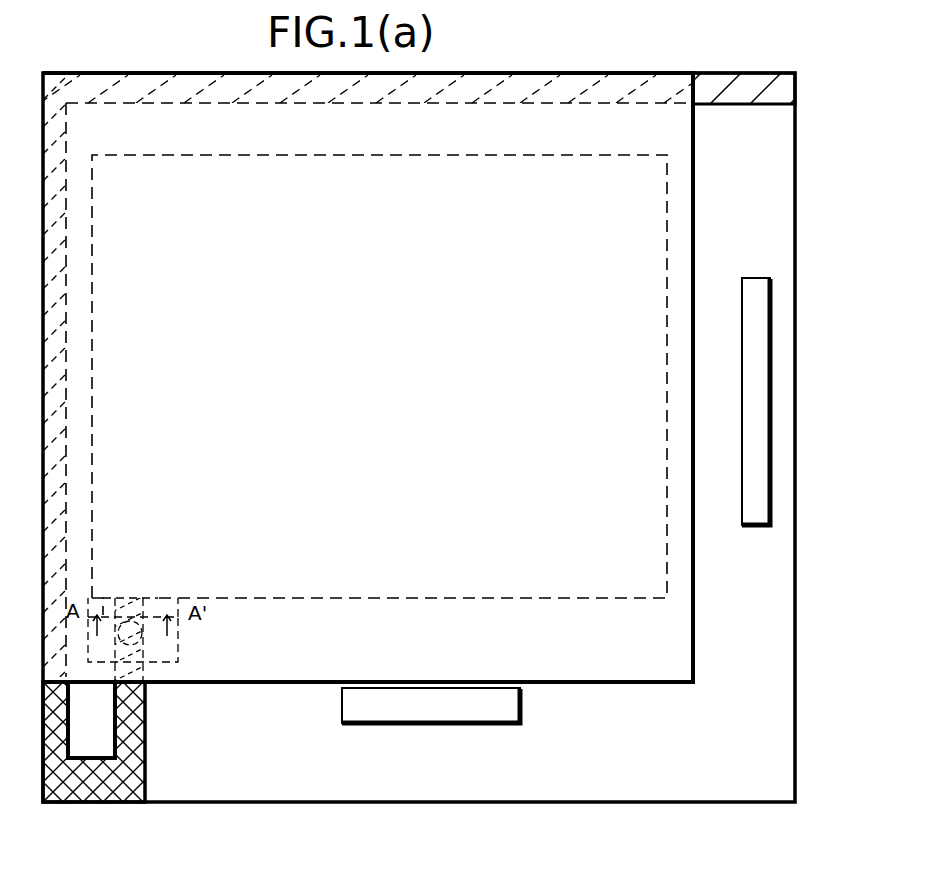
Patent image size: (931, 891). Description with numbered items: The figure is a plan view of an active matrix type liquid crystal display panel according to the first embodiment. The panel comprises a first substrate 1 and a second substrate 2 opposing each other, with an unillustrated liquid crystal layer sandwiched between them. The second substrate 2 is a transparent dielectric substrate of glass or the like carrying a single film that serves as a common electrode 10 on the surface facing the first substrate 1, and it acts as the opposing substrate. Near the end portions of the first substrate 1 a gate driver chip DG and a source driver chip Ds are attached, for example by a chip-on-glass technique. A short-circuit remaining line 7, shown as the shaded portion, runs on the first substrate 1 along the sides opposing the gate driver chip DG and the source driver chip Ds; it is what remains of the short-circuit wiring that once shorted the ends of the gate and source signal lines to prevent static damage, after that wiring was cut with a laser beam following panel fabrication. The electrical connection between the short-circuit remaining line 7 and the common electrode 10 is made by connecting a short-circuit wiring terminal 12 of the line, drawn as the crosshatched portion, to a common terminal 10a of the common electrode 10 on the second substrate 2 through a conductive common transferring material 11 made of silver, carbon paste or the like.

The first substrate 1 is at (797, 210).
The second substrate 2 is at (693, 657).
The short-circuit remaining line 7 is at (555, 100).
The common electrode 10 is at (668, 573).
The common terminal 10a is at (178, 642).
The conductive common transferring material 11 is at (150, 607).
The short-circuit wiring terminal 12 is at (102, 795).
The gate driver chip DG is at (760, 390).
The source driver chip Ds is at (420, 710).